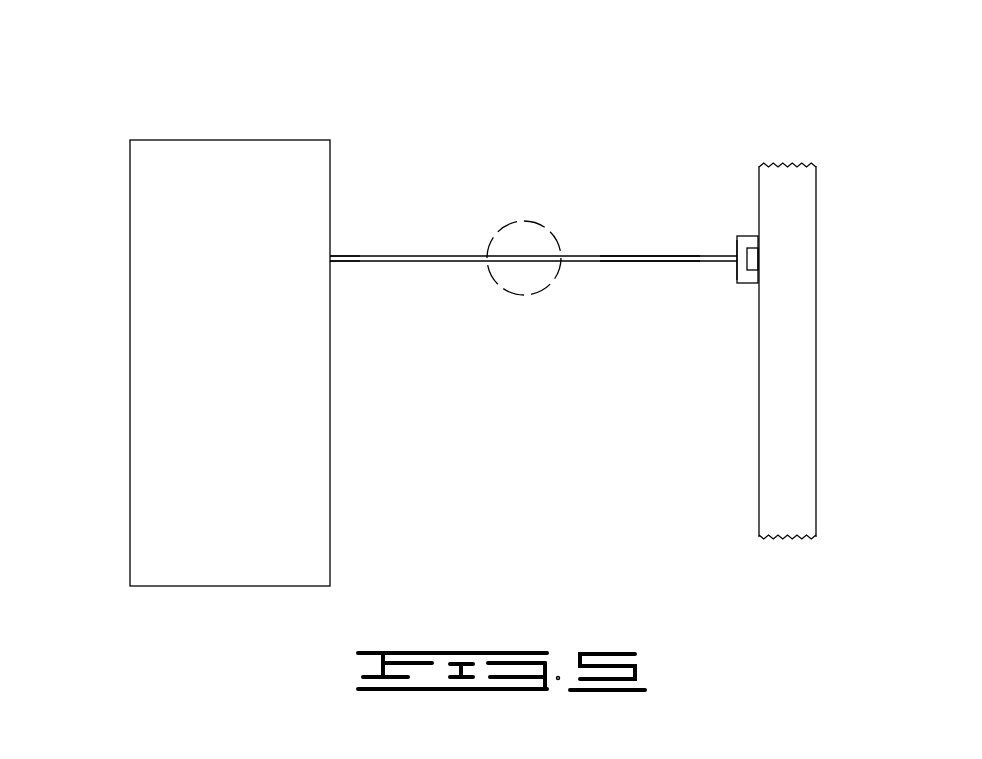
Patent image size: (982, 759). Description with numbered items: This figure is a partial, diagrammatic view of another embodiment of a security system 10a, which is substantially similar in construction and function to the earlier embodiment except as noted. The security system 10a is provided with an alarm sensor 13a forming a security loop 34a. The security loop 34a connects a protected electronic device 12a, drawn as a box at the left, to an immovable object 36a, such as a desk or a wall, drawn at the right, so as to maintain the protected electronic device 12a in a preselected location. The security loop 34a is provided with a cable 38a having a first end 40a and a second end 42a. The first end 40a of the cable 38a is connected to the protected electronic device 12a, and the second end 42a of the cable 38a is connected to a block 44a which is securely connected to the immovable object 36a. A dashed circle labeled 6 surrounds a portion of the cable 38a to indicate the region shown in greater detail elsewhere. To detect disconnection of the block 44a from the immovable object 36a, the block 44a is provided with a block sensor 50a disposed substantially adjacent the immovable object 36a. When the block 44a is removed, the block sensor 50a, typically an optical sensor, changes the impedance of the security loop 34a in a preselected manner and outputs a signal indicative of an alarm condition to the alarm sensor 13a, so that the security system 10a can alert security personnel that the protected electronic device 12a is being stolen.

The security system 10a is at (350, 87).
The protected electronic device 12a is at (130, 250).
The alarm sensor 13a is at (468, 157).
The security loop 34a is at (638, 262).
The immovable object 36a is at (816, 375).
The cable 38a is at (465, 262).
The first end 40a is at (331, 256).
The second end 42a is at (737, 257).
The block 44a is at (739, 283).
The block sensor 50a is at (752, 250).
The detail circle (FIG. 6) 6 is at (545, 230).